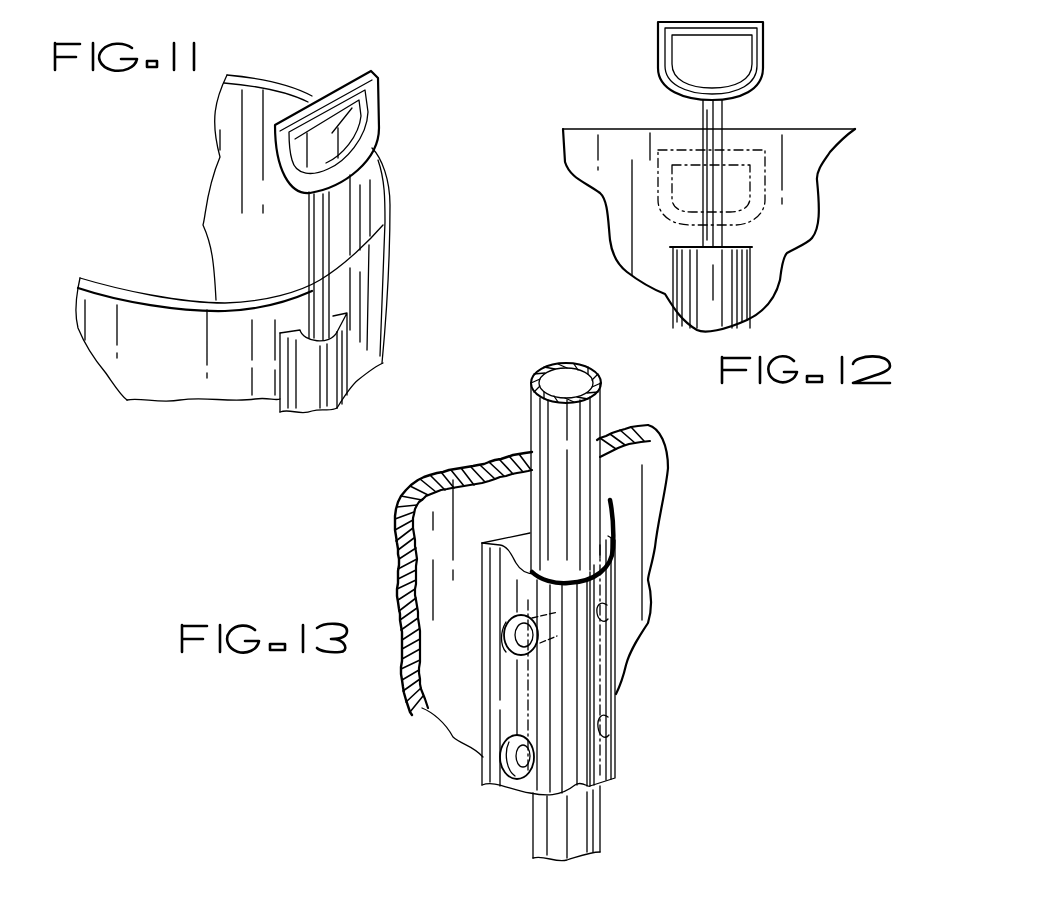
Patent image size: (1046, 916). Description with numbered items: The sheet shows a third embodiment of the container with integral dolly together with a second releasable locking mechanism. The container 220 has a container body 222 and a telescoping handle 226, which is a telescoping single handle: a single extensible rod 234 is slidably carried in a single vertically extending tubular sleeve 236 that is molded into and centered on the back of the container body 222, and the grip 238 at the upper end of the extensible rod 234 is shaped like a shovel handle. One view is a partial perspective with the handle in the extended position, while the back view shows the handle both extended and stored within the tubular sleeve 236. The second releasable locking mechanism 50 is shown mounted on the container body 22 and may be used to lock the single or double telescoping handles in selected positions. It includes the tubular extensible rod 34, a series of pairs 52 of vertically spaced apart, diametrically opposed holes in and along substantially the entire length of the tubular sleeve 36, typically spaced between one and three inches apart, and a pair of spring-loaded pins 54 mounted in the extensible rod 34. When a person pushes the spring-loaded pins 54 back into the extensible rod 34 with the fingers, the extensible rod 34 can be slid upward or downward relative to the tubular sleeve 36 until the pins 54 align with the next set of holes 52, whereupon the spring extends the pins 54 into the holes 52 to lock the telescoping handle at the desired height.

In FIG. 11, the container 220 is at (266, 70).
In FIG. 12, the container 220 is at (814, 60).
In FIG. 11, the container body 222 is at (158, 365).
In FIG. 12, the container body 222 is at (788, 222).
In FIG. 11, the telescoping handle 226 is at (360, 300).
In FIG. 12, the telescoping handle 226 is at (640, 220).
In FIG. 11, the extensible rod 234 is at (310, 253).
In FIG. 12, the extensible rod 234 is at (700, 118).
In FIG. 11, the tubular sleeve 236 is at (300, 383).
In FIG. 12, the tubular sleeve 236 is at (737, 280).
In FIG. 11, the grip 238 is at (362, 73).
In FIG. 12, the grip 238 is at (655, 0).
In FIG. 13, the container body 22 is at (404, 541).
In FIG. 13, the extensible rod 34 is at (532, 405).
In FIG. 13, the tubular sleeve 36 is at (618, 703).
In FIG. 13, the second releasable locking mechanism 50 is at (710, 630).
In FIG. 13, the pairs of holes 52 is at (505, 662).
In FIG. 13, the spring-loaded pins 54 is at (504, 630).